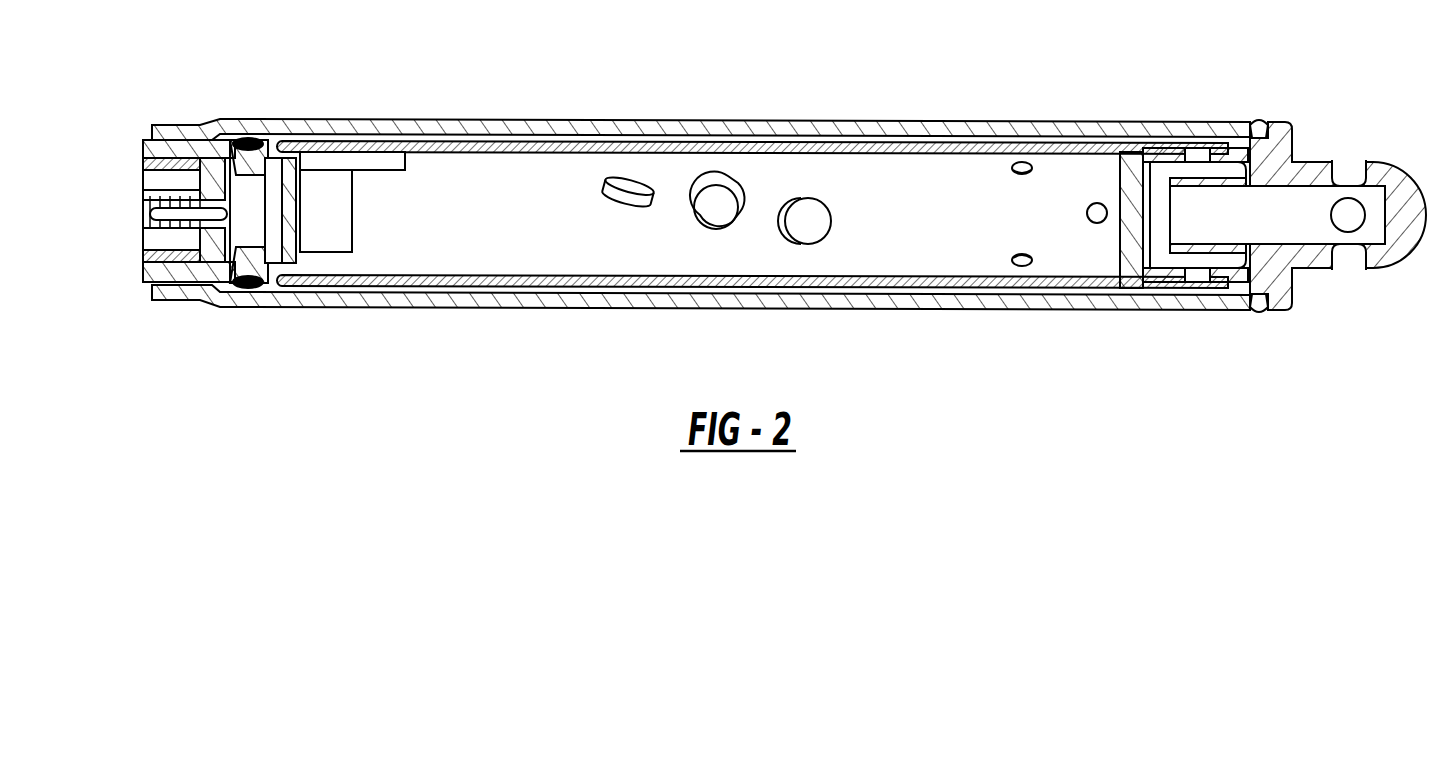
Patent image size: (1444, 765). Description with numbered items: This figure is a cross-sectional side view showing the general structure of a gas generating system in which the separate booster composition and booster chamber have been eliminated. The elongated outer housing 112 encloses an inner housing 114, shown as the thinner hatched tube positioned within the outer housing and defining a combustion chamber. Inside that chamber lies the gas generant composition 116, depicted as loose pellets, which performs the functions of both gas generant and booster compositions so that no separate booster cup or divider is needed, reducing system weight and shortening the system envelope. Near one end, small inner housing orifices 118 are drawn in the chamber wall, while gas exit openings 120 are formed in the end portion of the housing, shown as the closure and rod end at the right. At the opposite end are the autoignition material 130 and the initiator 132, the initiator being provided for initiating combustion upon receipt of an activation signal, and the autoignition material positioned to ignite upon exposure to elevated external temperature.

The housing 112 is at (636, 118).
The inner tube 114 is at (443, 127).
The gas generant composition 116 is at (734, 185).
The seal ring 118 is at (1030, 172).
The end cap 120 is at (1347, 175).
The block 130 is at (337, 162).
The piston 132 is at (253, 197).